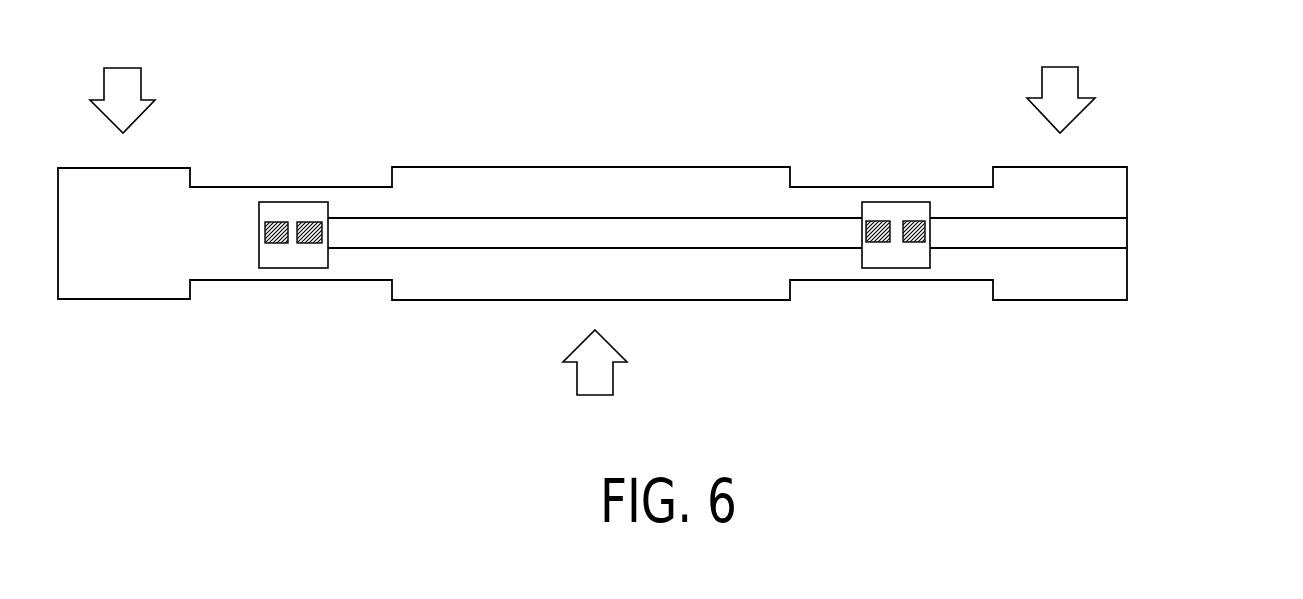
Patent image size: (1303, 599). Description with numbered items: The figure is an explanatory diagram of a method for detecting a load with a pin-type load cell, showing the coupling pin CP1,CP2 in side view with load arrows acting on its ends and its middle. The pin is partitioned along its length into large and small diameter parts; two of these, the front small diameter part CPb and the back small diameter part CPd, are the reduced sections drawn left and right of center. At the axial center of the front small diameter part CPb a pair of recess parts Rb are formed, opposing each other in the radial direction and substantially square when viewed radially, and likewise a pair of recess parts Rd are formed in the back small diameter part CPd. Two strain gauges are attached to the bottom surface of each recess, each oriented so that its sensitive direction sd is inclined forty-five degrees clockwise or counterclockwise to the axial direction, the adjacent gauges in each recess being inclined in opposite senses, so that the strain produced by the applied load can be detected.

The coupling pin CP1,CP2 is at (1098, 190).
The front small diameter part CPb is at (372, 208).
The back small diameter part CPd is at (815, 197).
The recess parts Rb is at (286, 205).
The recess parts Rd is at (893, 208).
The sensitive direction sd is at (270, 235).